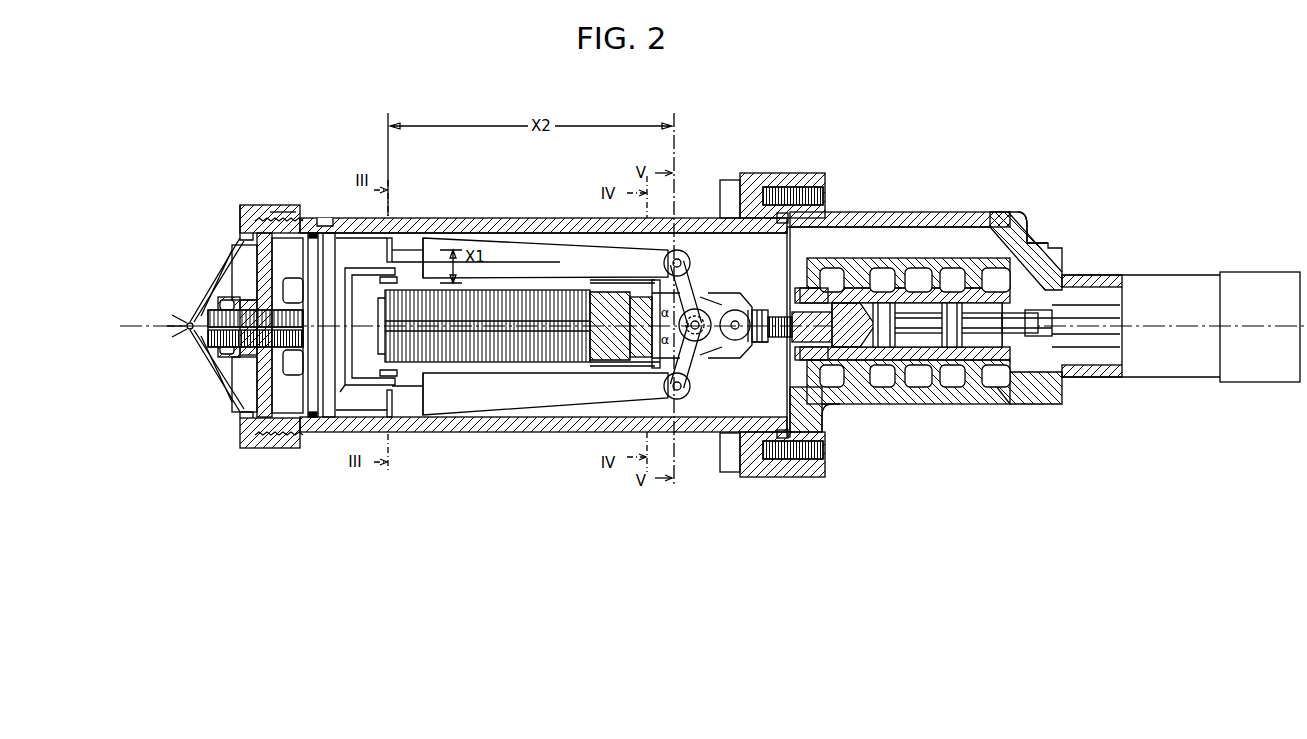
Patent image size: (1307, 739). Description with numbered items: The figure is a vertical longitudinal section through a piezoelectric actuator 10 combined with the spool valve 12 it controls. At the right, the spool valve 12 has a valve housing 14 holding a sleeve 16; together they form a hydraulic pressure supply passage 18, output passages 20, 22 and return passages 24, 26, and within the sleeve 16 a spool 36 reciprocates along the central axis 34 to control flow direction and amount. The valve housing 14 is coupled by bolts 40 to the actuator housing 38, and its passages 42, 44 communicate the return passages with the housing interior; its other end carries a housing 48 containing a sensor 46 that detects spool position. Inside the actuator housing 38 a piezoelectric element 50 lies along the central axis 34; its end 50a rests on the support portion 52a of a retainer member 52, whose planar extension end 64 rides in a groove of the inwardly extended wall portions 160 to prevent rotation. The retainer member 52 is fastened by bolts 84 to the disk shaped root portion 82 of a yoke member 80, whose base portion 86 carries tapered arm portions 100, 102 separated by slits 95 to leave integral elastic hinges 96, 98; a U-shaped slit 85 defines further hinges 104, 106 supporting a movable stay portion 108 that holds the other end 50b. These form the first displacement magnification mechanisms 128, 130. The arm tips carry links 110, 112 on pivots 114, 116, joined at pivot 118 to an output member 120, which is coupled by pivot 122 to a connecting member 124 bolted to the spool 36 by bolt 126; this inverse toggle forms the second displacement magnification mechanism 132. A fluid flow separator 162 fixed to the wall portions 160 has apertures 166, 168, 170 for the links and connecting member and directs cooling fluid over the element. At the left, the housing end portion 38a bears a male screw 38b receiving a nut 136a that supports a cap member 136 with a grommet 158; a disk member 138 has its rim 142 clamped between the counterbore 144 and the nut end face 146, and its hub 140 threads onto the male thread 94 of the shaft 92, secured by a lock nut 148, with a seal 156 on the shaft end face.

The piezoelectric actuator 10 is at (540, 216).
The spool valve 12 is at (955, 212).
The valve housing 14 is at (1022, 226).
The sleeve 16 is at (876, 267).
The hydraulic pressure supply passage 18 is at (920, 386).
The output passage 20 is at (888, 386).
The output passage 22 is at (953, 386).
The return passage 24 is at (860, 386).
The return passage 26 is at (1000, 400).
The central axis 34 is at (1200, 324).
The spool 36 is at (840, 268).
The actuator housing 38 is at (568, 218).
The left end portion of the housing 38a is at (323, 215).
The male screw 38b is at (290, 219).
The bolts 40 is at (730, 182).
The passage 42 is at (826, 410).
The passage 44 is at (925, 226).
The sensor 46 is at (1100, 352).
The housing 48 is at (1145, 277).
The piezoelectric element 50 is at (538, 292).
The one end of the piezoelectric element 50a is at (577, 364).
The other end of the piezoelectric element 50b is at (385, 305).
The retainer member 52 is at (637, 298).
The support portion 52a is at (602, 300).
The end of planar extension 64 is at (655, 292).
The yoke member 80 is at (480, 238).
The disk shaped root portion 82 is at (316, 235).
The bolts 84 is at (292, 280).
The U-shaped slit 85 is at (352, 270).
The base portion 86 is at (330, 235).
The shaft 92 is at (216, 335).
The male screw thread 94 is at (272, 350).
The slits 95 is at (392, 217).
The integral elastic hinge 96 is at (393, 240).
The integral elastic hinge 98 is at (400, 417).
The arm portion 100 is at (510, 250).
The arm portion 102 is at (515, 395).
The integral elastic hinge 104 is at (383, 281).
The integral elastic hinge 106 is at (383, 371).
The movable stay portion 108 is at (355, 380).
The link 110 is at (691, 263).
The link 112 is at (691, 388).
The pivot 114 is at (682, 250).
The pivot 116 is at (681, 399).
The pivot 118 is at (703, 340).
The output member 120 is at (756, 309).
The pivot 122 is at (741, 318).
The connecting member 124 is at (764, 344).
The bolt 126 is at (798, 312).
The first displacement magnification mechanism 128 is at (438, 235).
The first displacement magnification mechanism 130 is at (430, 410).
The second displacement magnification mechanism 132 is at (675, 410).
The cap member 136 is at (216, 270).
The nut 136a is at (265, 449).
The disk member 138 is at (245, 414).
The central hub portion 140 is at (240, 365).
The annular peripheral rim portion 142 is at (262, 207).
The counterbore portion 144 is at (276, 207).
The annular end face 146 is at (245, 212).
The lock nut 148 is at (205, 345).
The seal 156 is at (217, 303).
The grommet 158 is at (188, 321).
The inwardly extended wall portions 160 is at (640, 364).
The fluid flow separator 162 is at (741, 296).
The aperture 166 is at (708, 296).
The aperture 168 is at (707, 357).
The aperture 170 is at (751, 343).